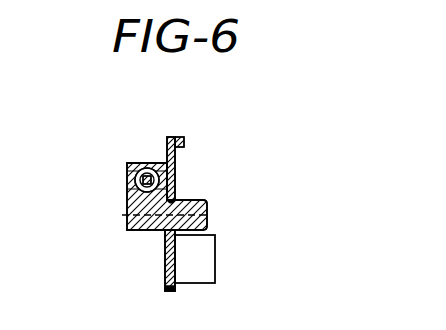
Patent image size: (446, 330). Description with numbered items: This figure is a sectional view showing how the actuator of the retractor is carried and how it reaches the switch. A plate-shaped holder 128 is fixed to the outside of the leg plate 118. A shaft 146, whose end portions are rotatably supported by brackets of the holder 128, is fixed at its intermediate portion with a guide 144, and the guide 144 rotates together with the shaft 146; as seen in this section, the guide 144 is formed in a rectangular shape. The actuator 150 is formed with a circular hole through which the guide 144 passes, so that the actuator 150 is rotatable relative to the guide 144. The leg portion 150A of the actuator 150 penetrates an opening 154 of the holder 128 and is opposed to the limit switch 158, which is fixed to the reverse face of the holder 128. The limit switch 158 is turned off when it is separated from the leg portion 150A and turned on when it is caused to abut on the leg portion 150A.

The leg plate 118 is at (184, 143).
The plate-shaped holder 128 is at (171, 137).
The guide 144 is at (148, 168).
The shaft 146 is at (135, 180).
The actuator 150 is at (127, 212).
The leg portion 150A is at (207, 214).
The opening 154 is at (176, 200).
The limit switch 158 is at (210, 262).